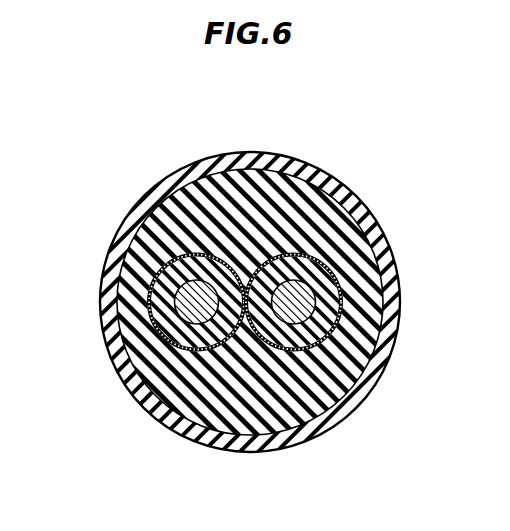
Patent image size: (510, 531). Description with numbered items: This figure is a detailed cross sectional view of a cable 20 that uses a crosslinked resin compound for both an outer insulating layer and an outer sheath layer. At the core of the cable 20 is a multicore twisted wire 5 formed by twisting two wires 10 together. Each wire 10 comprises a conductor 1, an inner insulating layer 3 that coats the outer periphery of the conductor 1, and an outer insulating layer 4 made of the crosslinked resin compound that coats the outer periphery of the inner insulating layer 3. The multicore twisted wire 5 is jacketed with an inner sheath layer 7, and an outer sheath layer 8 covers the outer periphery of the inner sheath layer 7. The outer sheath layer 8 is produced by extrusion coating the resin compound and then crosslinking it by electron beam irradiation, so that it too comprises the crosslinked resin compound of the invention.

The cable 20 is at (113, 221).
The outer sheath layer 8 is at (350, 397).
The inner sheath layer 7 is at (348, 352).
The multicore twisted wire 5 is at (247, 262).
The wire 10 is at (255, 265).
The conductor 1 is at (303, 297).
The inner insulating layer 3 is at (328, 307).
The outer insulating layer 4 is at (340, 322).